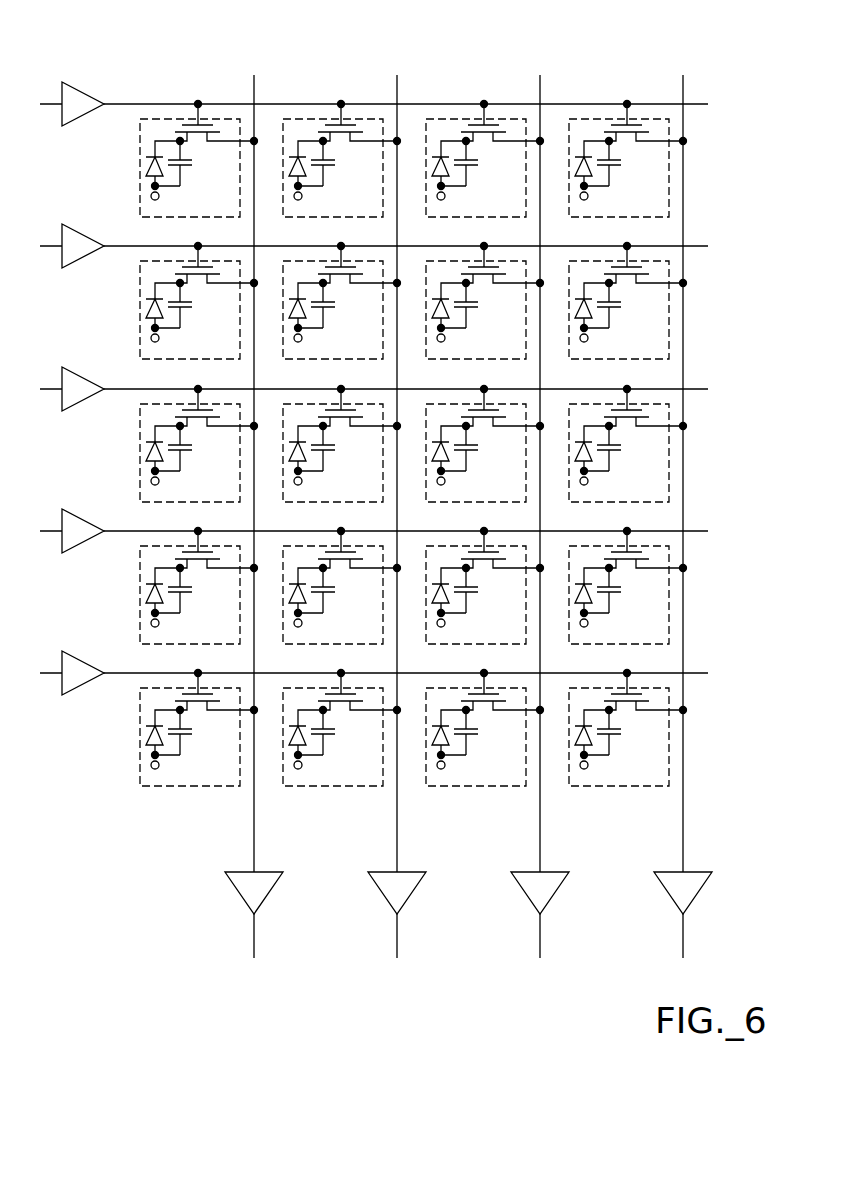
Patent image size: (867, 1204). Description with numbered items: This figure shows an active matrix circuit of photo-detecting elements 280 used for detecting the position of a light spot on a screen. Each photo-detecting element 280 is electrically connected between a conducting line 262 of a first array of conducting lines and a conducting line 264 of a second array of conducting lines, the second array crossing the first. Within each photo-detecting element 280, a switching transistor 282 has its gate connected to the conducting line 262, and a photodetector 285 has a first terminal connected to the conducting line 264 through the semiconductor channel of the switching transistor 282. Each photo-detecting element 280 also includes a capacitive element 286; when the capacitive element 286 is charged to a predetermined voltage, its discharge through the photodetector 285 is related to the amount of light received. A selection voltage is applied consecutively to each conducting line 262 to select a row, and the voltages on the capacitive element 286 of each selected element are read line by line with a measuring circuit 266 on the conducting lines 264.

The conducting line in the first array of conducting lines 262 is at (410, 103).
The conducting line in the second array of conducting lines 264 is at (683, 590).
The measuring circuit 266 is at (521, 893).
The photo-detecting element 280 is at (653, 120).
The switching transistor 282 is at (608, 120).
The photodetector 285 is at (588, 177).
The capacitive element 286 is at (610, 158).